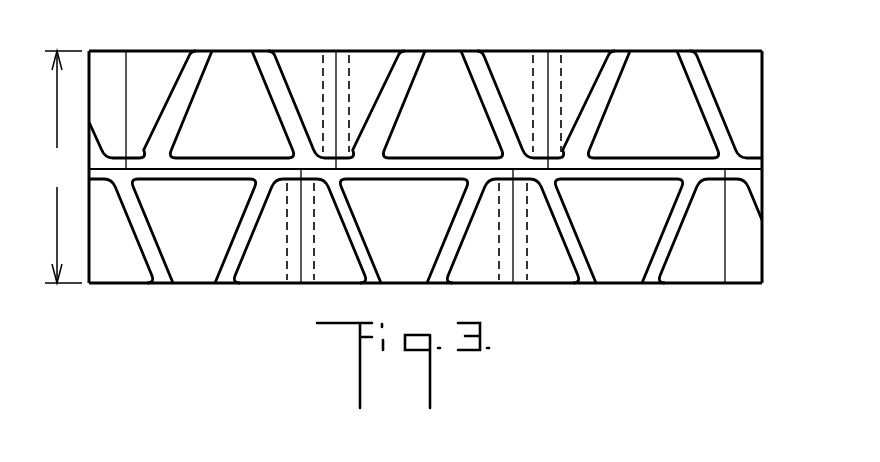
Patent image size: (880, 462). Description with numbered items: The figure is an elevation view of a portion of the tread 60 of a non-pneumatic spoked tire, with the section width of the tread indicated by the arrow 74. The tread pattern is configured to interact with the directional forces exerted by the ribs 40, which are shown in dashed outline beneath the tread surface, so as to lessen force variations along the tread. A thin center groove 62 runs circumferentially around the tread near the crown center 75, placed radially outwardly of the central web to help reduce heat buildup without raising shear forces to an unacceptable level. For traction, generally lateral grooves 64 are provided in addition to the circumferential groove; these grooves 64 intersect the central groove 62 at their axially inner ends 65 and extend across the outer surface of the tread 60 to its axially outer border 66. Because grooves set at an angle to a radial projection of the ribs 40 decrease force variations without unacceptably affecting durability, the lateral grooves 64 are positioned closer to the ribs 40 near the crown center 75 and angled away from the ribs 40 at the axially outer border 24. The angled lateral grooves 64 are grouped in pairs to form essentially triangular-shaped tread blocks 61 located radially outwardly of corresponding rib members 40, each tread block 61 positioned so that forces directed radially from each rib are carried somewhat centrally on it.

The axially outer border 24 is at (618, 285).
The ribs 40 is at (348, 66).
The tread 60 is at (607, 51).
The tread blocks 61 is at (458, 131).
The center groove 62 is at (678, 155).
The lateral grooves 64 is at (677, 227).
The axially inner ends 65 is at (150, 157).
The axially outer border 66 is at (202, 51).
The arrow indicating section width 74 is at (61, 167).
The crown center 75 is at (762, 169).